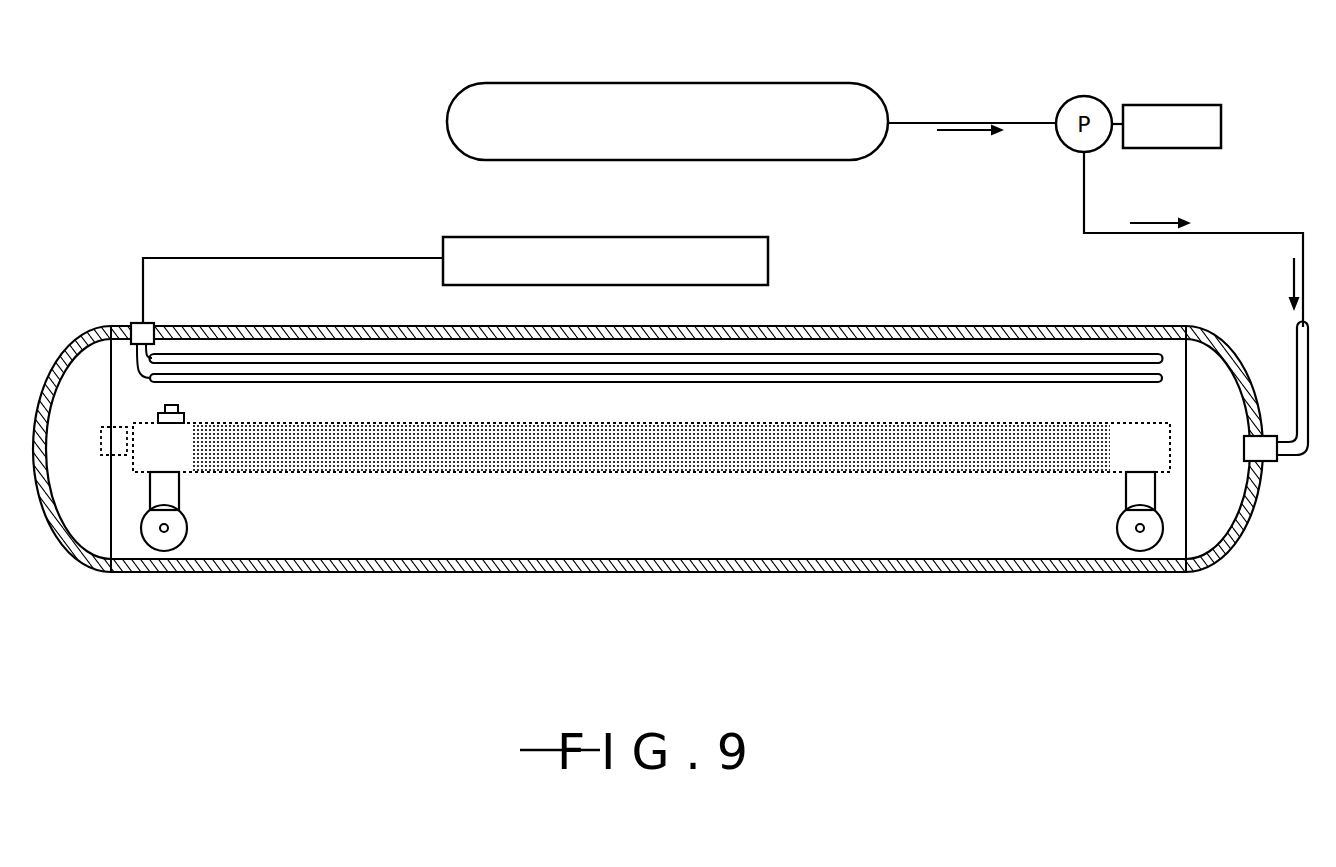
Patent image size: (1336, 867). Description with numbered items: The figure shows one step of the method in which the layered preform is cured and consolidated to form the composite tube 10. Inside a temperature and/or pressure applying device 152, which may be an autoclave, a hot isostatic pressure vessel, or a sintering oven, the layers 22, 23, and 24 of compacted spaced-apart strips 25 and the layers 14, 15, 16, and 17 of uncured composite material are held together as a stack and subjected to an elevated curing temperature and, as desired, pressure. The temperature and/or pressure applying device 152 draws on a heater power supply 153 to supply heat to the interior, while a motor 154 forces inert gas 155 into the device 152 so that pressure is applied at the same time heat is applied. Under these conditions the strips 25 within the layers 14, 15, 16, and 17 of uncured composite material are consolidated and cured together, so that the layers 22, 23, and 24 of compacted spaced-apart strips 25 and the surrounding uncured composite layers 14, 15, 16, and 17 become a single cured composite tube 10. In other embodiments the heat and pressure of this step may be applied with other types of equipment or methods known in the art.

The composite tube 10 is at (763, 475).
The layer of uncured composite material 14 is at (838, 462).
The layer of uncured composite material 15 is at (651, 433).
The layer of uncured composite material 16 is at (651, 439).
The layer of uncured composite material 17 is at (651, 445).
The layer of compacted spaced-apart strips 22 is at (651, 552).
The layer of compacted spaced-apart strips 23 is at (651, 457).
The layer of compacted spaced-apart strips 24 is at (651, 463).
The compacted spaced-apart strips 25 is at (651, 469).
The temperature and/or pressure applying device 152 is at (1170, 573).
The heater power supply 153 is at (768, 252).
The motor 154 is at (1150, 105).
The inert gas 155 is at (782, 83).